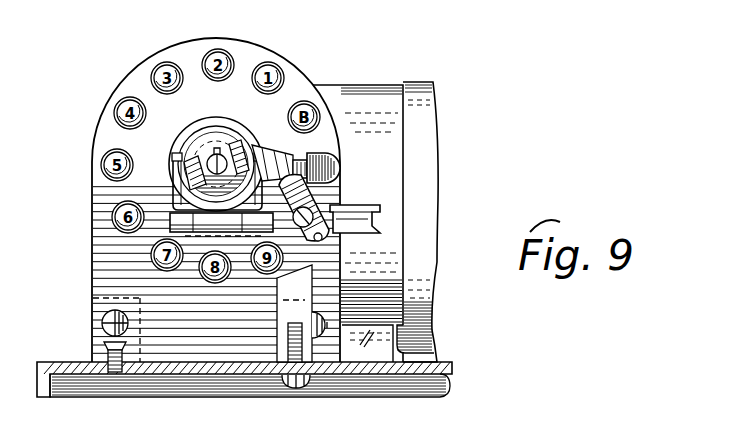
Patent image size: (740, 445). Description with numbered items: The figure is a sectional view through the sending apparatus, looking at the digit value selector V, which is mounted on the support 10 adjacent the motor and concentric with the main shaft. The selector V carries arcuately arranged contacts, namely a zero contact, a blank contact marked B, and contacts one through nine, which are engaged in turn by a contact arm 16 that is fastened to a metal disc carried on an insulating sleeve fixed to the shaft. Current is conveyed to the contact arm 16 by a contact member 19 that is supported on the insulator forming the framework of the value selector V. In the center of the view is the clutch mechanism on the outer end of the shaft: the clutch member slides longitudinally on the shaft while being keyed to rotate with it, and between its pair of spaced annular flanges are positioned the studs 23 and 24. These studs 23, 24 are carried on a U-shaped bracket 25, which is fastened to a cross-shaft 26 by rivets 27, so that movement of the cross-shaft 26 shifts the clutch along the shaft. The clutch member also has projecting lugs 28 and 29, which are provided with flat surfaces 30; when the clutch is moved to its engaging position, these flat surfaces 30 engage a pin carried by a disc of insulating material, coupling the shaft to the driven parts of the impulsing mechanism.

The digit value selector V is at (256, 54).
The support 10 is at (340, 152).
The contact arm 16 is at (304, 158).
The contact member 19 is at (300, 190).
The stud 23 is at (174, 158).
The stud 24 is at (258, 150).
The U-shaped bracket 25 is at (172, 222).
The cross-shaft 26 is at (365, 206).
The rivets 27 is at (246, 235).
The projecting lug 28 is at (197, 170).
The projecting lug 29 is at (247, 155).
The flat surfaces 30 is at (232, 138).